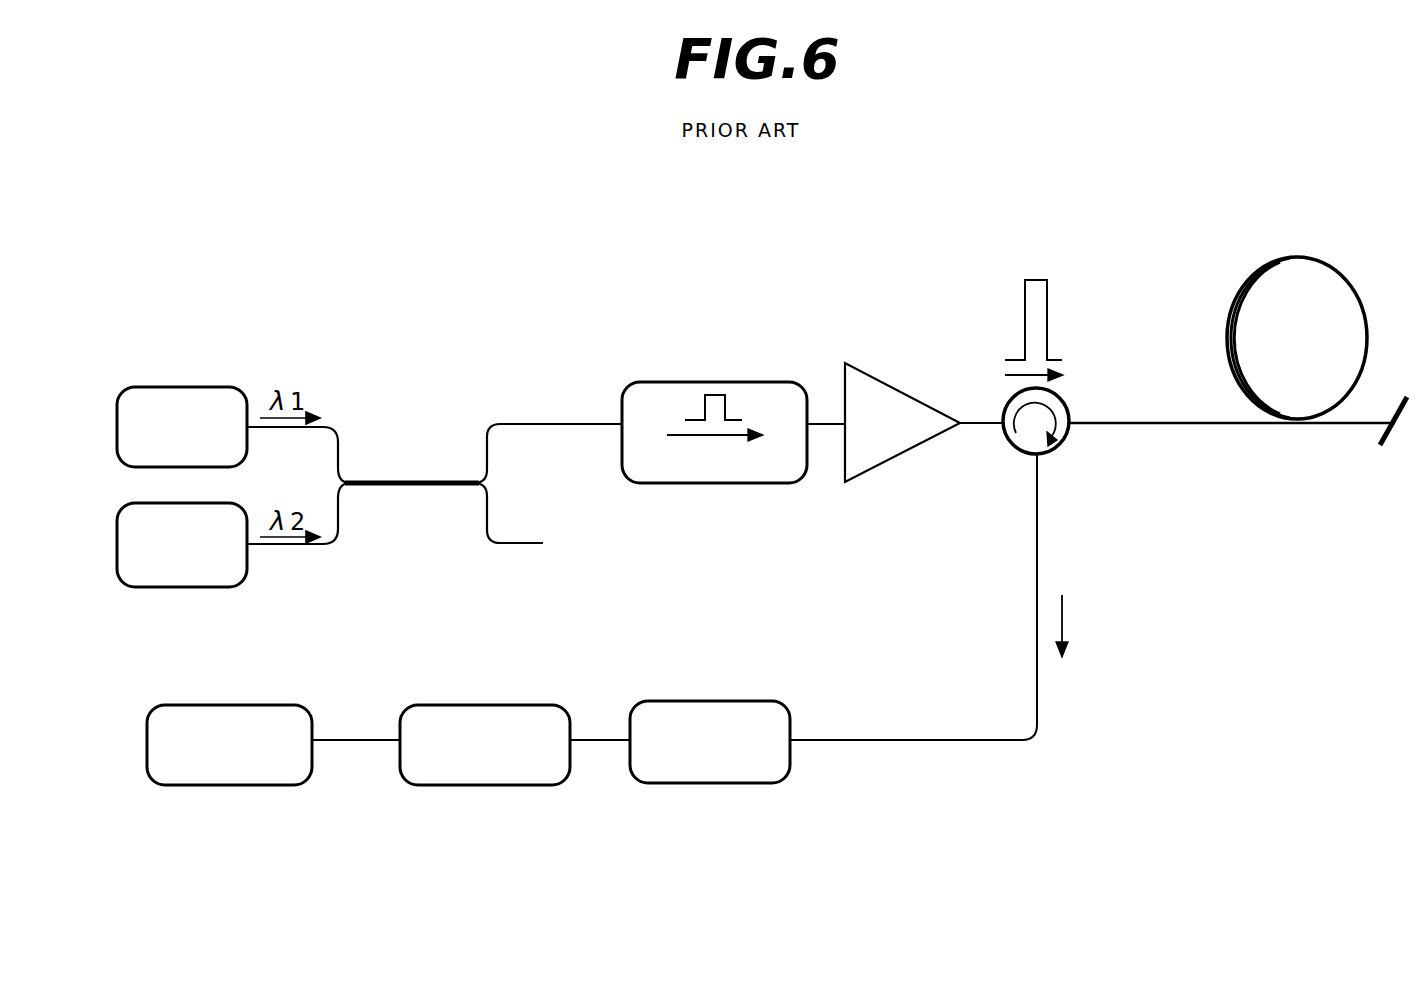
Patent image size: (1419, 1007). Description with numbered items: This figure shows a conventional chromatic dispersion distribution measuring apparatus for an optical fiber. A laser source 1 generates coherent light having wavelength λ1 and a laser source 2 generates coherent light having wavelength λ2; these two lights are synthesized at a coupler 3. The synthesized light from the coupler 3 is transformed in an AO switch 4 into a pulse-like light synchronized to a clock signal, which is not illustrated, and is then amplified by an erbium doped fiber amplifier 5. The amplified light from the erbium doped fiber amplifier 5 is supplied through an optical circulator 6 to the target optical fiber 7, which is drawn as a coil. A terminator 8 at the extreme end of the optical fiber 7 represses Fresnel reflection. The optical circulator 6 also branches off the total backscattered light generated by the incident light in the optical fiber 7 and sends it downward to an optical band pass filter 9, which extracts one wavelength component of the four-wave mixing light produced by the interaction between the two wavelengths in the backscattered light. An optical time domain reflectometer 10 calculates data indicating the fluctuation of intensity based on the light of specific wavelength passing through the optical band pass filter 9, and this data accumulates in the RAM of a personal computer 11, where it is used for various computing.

The laser source 1 is at (185, 388).
The laser source 2 is at (143, 588).
The coupler 3 is at (396, 483).
The AO switch 4 is at (625, 390).
The erbium doped fiber amplifier 5 is at (866, 376).
The optical circulator 6 is at (1004, 448).
The optical fiber 7 is at (1317, 257).
The terminator 8 is at (1409, 395).
The optical band pass filter 9 is at (747, 700).
The optical time domain reflectometer 10 is at (498, 705).
The personal computer 11 is at (278, 705).